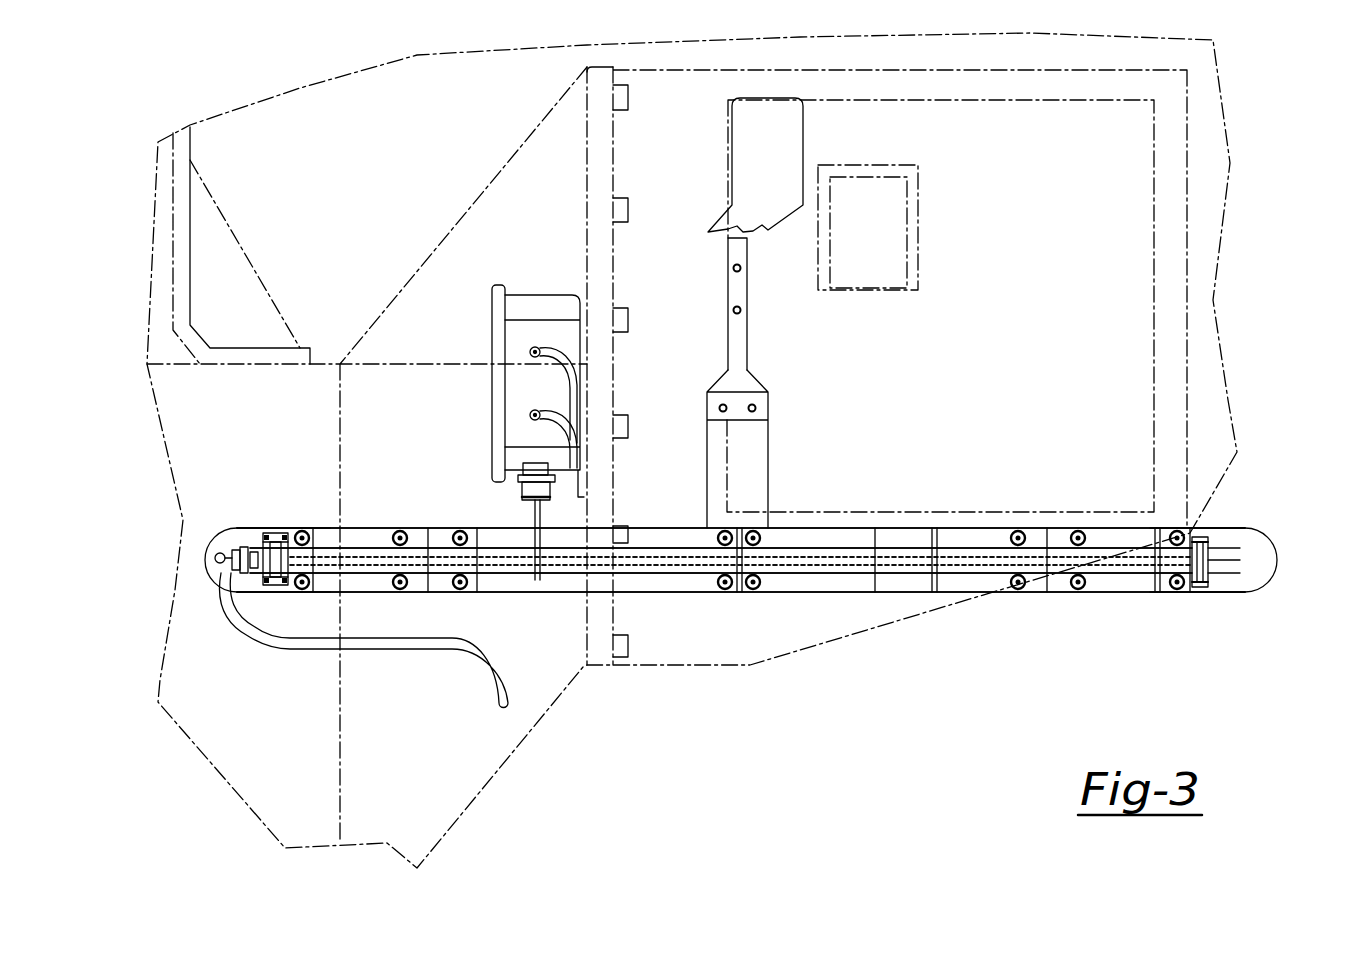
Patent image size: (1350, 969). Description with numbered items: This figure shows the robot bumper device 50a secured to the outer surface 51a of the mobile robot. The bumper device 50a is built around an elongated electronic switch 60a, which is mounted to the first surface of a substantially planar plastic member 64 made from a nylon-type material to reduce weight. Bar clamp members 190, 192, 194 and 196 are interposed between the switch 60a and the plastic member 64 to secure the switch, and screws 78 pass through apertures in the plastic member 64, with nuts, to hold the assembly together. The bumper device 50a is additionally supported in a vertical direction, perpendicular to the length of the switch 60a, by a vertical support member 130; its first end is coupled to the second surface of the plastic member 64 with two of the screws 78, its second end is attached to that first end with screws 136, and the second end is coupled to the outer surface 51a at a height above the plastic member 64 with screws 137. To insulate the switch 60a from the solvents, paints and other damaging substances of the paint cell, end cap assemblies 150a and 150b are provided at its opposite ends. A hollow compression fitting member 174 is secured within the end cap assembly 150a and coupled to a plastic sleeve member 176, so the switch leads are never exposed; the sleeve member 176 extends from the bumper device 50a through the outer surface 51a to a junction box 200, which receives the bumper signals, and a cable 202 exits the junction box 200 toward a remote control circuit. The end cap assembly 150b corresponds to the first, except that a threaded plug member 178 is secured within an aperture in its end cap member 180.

The outer surface 51a is at (268, 781).
The vertical support member 130 is at (686, 420).
The screws 137 is at (740, 311).
The screws 136 is at (728, 404).
The junction box 200 is at (538, 306).
The cable 202 is at (534, 515).
The bumper device 50a is at (748, 606).
The bar clamp member 190 is at (675, 541).
The bar clamp member 192 is at (675, 586).
The bar clamp member 194 is at (845, 538).
The bar clamp member 196 is at (822, 586).
The electronic switch 60a is at (497, 565).
The screws 78 is at (768, 530).
The plastic member 64 is at (228, 533).
The end cap assembly 150a is at (293, 518).
The end cap assembly 150b is at (1212, 520).
The compression fitting member 174 is at (246, 574).
The threaded plug member 178 is at (1208, 562).
The end cap member 180 is at (1215, 545).
The sleeve member 176 is at (238, 651).